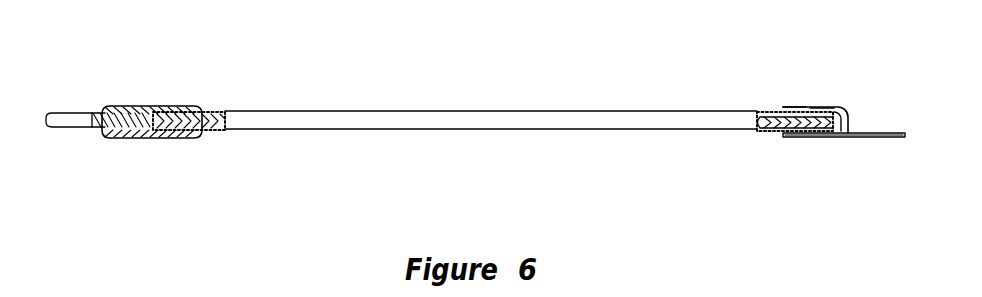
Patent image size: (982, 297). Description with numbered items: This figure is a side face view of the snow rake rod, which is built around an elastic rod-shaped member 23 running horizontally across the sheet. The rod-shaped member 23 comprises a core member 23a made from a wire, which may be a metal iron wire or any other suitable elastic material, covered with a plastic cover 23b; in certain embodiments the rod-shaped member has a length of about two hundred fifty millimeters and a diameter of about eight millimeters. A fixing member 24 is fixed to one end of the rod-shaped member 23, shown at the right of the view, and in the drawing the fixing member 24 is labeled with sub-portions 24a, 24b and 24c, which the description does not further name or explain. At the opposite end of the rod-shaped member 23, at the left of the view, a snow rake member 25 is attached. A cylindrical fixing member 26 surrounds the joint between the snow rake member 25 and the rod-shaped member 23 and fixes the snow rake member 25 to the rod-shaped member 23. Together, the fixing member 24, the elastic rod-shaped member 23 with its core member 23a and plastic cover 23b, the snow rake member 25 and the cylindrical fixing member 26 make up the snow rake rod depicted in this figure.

The rod-shaped member 23 is at (493, 80).
The core member 23a is at (226, 119).
The plastic cover 23b is at (275, 56).
The fixing member 24 is at (844, 91).
The crimp portion 24a is at (853, 133).
The sleeve portion 24b is at (808, 108).
The terminal tab 24c is at (886, 137).
The snow rake member 25 is at (73, 118).
The cylindrical fixing member 26 is at (141, 107).